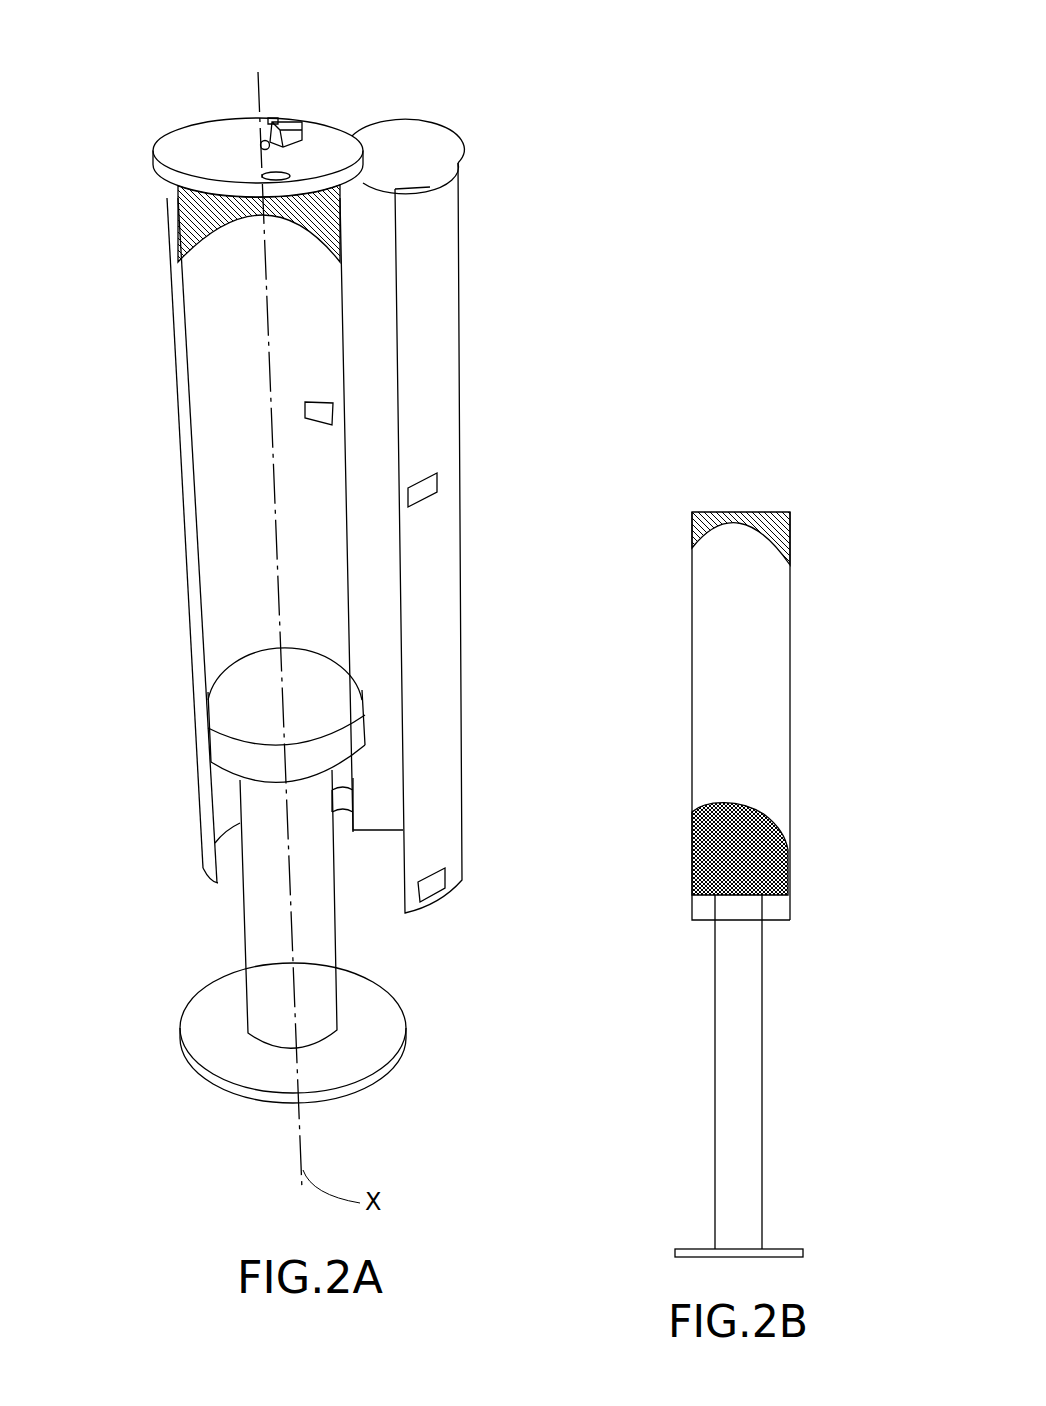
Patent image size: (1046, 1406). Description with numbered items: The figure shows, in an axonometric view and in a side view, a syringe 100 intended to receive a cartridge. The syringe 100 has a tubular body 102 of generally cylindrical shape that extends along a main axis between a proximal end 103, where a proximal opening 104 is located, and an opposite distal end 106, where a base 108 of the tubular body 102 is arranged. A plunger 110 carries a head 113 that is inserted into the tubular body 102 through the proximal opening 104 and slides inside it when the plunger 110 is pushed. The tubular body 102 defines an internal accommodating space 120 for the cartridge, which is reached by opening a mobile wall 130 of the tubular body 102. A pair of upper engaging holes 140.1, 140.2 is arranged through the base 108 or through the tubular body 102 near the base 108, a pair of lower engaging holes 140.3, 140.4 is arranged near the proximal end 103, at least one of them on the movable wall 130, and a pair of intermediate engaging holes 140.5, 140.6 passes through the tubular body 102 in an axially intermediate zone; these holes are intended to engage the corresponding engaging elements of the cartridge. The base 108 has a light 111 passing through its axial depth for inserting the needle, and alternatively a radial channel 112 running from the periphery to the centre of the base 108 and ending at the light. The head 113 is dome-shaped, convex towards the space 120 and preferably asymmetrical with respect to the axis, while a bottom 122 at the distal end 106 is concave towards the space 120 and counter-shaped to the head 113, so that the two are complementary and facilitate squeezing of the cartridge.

In FIG. 2A, the syringe 100 is at (538, 128).
In FIG. 2A, the body 102 is at (180, 461).
In FIG. 2A, the proximal end 103 is at (203, 897).
In FIG. 2A, the proximal opening 104 is at (234, 882).
In FIG. 2A, the distal end 106 is at (156, 210).
In FIG. 2B, the distal end 106 is at (688, 540).
In FIG. 2A, the base 108 is at (186, 156).
In FIG. 2A, the plunger 110 is at (410, 1053).
In FIG. 2B, the plunger 110 is at (733, 1123).
In FIG. 2A, the light 111 is at (264, 140).
In FIG. 2A, the radial channel 112 is at (310, 126).
In FIG. 2A, the head 113 is at (246, 686).
In FIG. 2B, the head 113 is at (782, 860).
In FIG. 2A, the internal accommodating space 120 is at (238, 508).
In FIG. 2B, the internal accommodating space 120 is at (732, 637).
In FIG. 2A, the bottom 122 is at (236, 232).
In FIG. 2B, the bottom 122 is at (745, 532).
In FIG. 2A, the mobile wall 130 is at (433, 287).
In FIG. 2A, the upper engaging hole 140.1 is at (273, 117).
In FIG. 2A, the upper engaging hole 140.2 is at (262, 176).
In FIG. 2A, the lower engaging hole 140.3 is at (348, 808).
In FIG. 2A, the lower engaging hole 140.4 is at (434, 895).
In FIG. 2A, the intermediate engaging hole 140.5 is at (440, 495).
In FIG. 2A, the intermediate engaging hole 140.6 is at (332, 408).